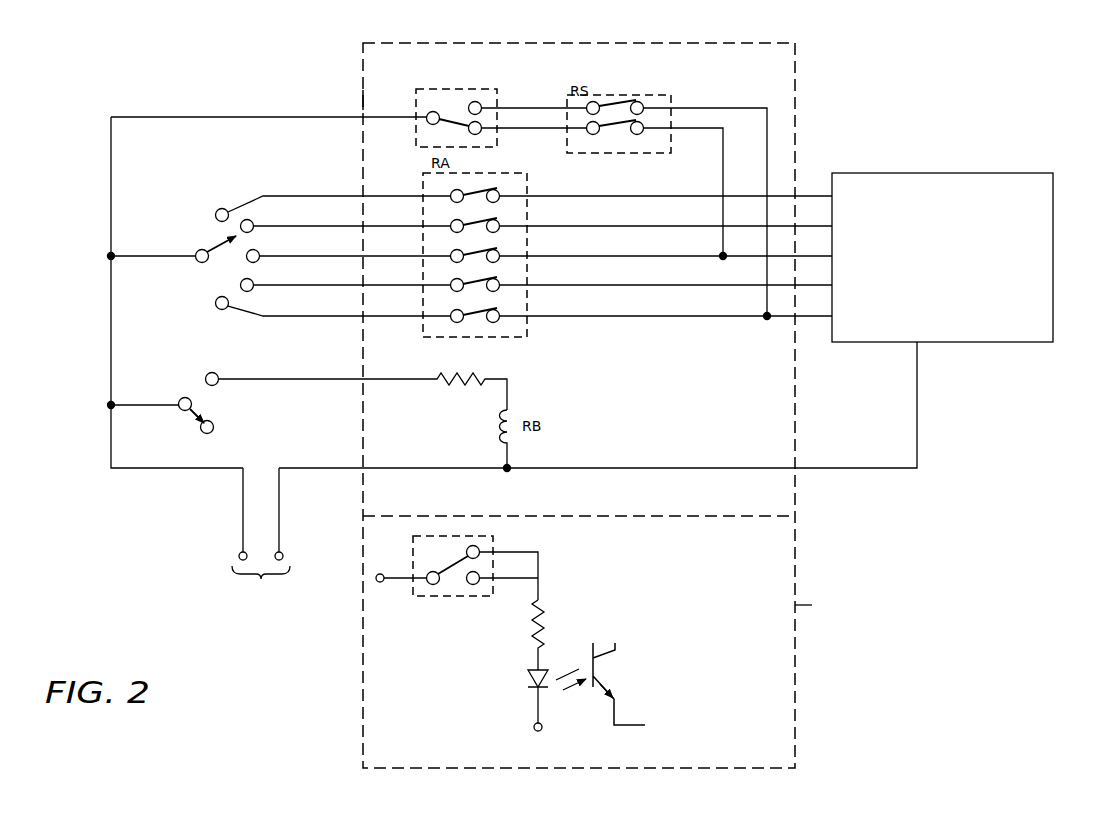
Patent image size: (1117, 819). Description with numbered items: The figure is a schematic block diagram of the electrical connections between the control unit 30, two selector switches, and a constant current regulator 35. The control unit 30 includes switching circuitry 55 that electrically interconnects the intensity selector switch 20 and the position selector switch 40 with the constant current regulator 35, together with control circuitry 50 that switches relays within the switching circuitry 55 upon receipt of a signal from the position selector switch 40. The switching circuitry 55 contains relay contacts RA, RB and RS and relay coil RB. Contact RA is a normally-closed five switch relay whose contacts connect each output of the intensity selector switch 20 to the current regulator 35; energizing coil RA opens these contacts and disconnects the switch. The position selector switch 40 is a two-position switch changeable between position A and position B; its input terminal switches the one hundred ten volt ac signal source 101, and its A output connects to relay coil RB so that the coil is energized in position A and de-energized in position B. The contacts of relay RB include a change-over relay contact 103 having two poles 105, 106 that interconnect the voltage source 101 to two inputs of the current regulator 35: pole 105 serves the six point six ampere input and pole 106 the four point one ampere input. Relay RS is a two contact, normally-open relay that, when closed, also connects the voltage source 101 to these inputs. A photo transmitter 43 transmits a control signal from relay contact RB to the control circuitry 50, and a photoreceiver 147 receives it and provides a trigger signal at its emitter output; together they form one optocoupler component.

The intensity selector switch 20 is at (198, 213).
The control unit 30 is at (688, 43).
The constant current regulator 35 is at (1055, 190).
The position selector switch 40 is at (172, 375).
The photo transmitter 43 is at (520, 680).
The control circuitry 50 is at (624, 654).
The switching circuitry 55 is at (363, 100).
The 110 volt ac signal source 101 is at (222, 557).
The change-over relay contact 103 is at (421, 91).
The pole 105 is at (475, 101).
The pole 106 is at (482, 125).
The photoreceiver 147 is at (585, 702).